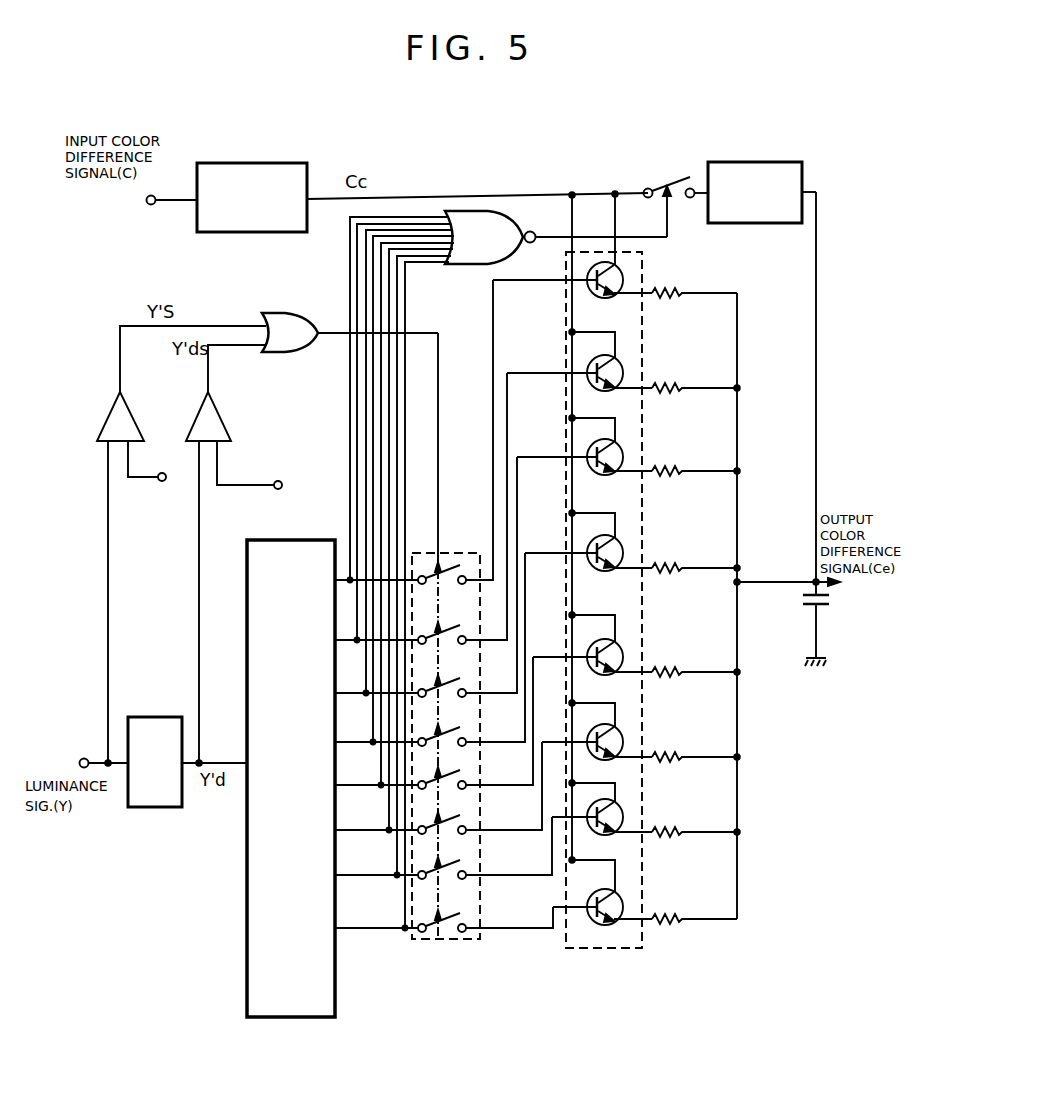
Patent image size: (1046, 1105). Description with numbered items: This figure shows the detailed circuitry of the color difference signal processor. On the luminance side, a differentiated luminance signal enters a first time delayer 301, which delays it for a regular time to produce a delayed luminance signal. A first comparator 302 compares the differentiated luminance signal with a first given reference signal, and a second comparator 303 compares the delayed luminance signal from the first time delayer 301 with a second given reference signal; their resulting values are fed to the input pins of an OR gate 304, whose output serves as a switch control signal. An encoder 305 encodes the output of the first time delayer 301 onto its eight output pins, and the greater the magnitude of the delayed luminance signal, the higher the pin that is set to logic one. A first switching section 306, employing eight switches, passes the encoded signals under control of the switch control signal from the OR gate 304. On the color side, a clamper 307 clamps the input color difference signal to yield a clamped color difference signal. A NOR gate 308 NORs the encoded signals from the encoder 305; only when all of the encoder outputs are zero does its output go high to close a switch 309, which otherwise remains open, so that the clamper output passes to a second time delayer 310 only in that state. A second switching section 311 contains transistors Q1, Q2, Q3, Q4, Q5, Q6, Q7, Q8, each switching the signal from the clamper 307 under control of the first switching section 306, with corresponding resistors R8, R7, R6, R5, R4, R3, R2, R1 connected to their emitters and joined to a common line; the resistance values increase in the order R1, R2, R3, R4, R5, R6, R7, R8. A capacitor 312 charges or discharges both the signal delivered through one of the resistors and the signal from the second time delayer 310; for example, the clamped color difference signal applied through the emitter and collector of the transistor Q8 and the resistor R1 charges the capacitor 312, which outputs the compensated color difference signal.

The first time delayer 301 is at (157, 807).
The first comparator 302 is at (135, 415).
The second comparator 303 is at (222, 418).
The OR gate 304 is at (292, 314).
The encoder 305 is at (292, 1019).
The first switching section 306 is at (441, 940).
The clamper 307 is at (256, 163).
The NOR gate 308 is at (469, 211).
The switch 309 is at (650, 183).
The second time delayer 310 is at (770, 162).
The second switching section 311 is at (567, 635).
The capacitor 312 is at (800, 600).
The transistor Q1 is at (558, 290).
The transistor Q2 is at (567, 371).
The transistor Q3 is at (570, 455).
The transistor Q4 is at (576, 553).
The transistor Q5 is at (581, 656).
The transistor Q6 is at (582, 740).
The transistor Q7 is at (587, 822).
The transistor Q8 is at (602, 949).
The resistor R1 is at (675, 909).
The resistor R2 is at (675, 822).
The resistor R3 is at (675, 747).
The resistor R4 is at (675, 662).
The resistor R5 is at (675, 558).
The resistor R6 is at (675, 461).
The resistor R7 is at (675, 378).
The resistor R8 is at (675, 283).